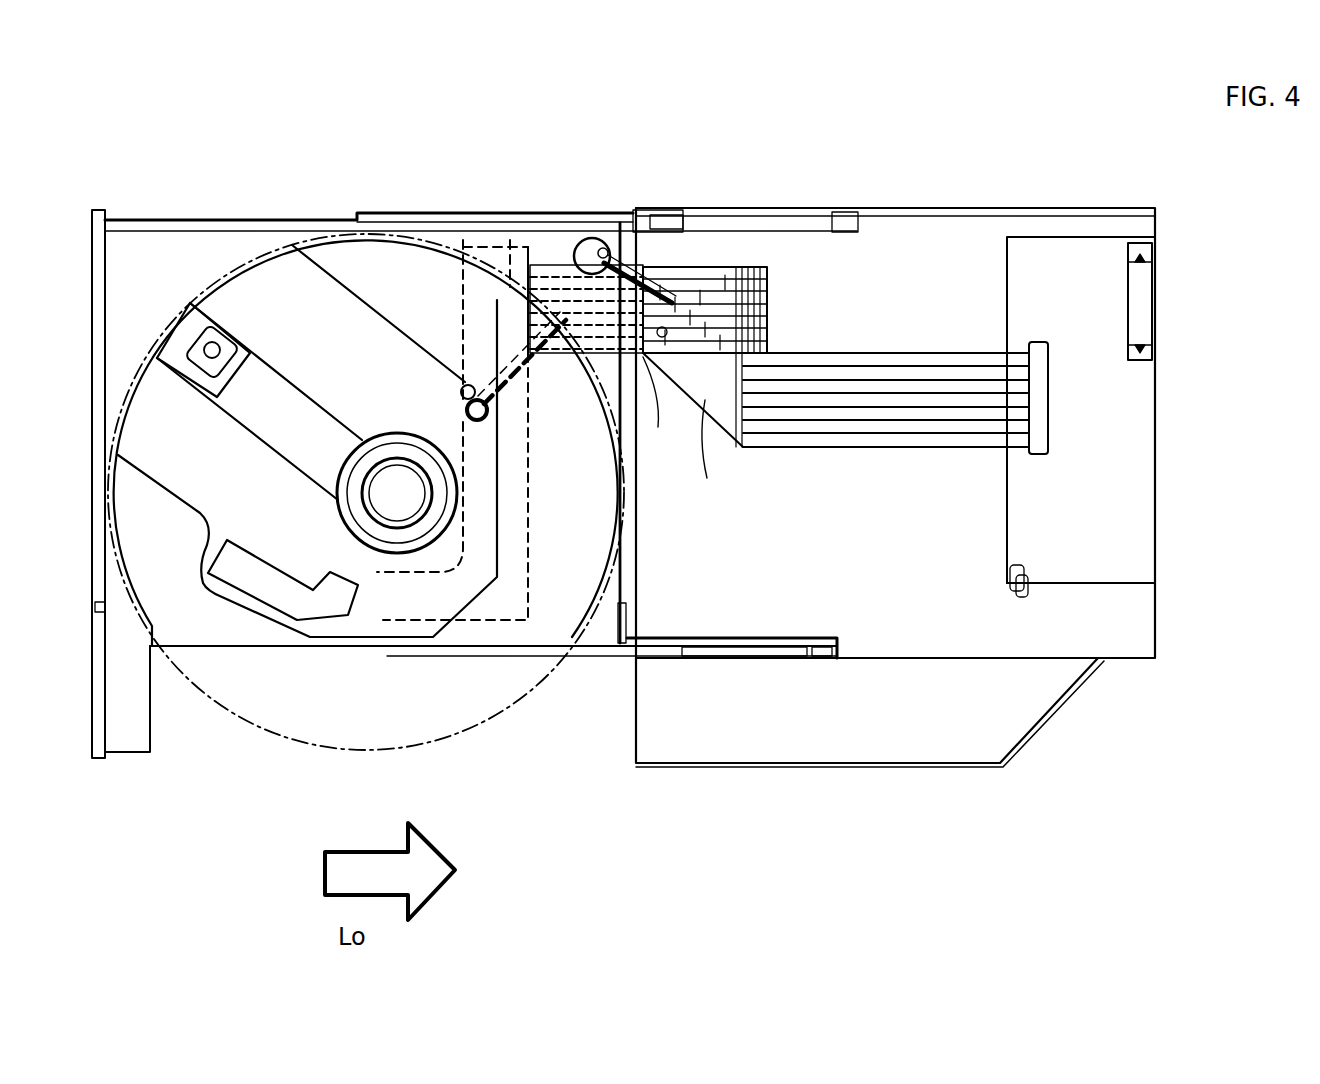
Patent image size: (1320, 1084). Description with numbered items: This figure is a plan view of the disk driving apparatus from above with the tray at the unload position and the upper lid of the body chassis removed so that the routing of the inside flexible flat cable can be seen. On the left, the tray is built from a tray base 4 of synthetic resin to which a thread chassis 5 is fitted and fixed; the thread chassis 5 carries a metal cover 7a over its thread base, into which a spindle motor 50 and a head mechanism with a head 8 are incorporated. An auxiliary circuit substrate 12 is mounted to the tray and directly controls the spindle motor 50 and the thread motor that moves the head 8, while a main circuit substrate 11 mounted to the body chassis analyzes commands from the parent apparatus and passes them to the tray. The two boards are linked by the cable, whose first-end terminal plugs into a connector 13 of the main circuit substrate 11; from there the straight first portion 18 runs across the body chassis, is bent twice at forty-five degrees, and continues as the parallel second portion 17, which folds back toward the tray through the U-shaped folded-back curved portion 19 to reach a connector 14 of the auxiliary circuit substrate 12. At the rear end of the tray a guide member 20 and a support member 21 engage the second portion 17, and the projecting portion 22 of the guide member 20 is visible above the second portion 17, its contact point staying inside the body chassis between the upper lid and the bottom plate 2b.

The tray base 4 is at (163, 220).
The metal cover 7a is at (255, 298).
The thread chassis 5 is at (253, 612).
The spindle motor 50 is at (338, 522).
The head 8 is at (185, 385).
The connector 14 is at (513, 228).
The support member 21 is at (541, 395).
The guide member 20 is at (634, 262).
The projecting portion 22 is at (676, 292).
The second portion 17 is at (705, 272).
The folded-back curved portion 19 is at (787, 310).
The first portion 18 is at (858, 425).
The connector 13 is at (1043, 423).
The bottom plate 2b is at (943, 208).
The main circuit substrate 11 is at (1082, 250).
The auxiliary circuit substrate 12 is at (517, 598).